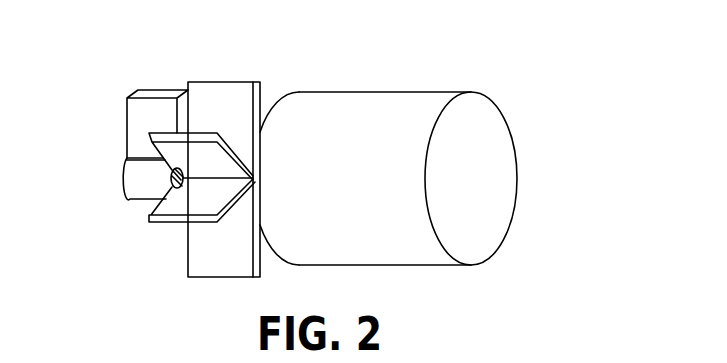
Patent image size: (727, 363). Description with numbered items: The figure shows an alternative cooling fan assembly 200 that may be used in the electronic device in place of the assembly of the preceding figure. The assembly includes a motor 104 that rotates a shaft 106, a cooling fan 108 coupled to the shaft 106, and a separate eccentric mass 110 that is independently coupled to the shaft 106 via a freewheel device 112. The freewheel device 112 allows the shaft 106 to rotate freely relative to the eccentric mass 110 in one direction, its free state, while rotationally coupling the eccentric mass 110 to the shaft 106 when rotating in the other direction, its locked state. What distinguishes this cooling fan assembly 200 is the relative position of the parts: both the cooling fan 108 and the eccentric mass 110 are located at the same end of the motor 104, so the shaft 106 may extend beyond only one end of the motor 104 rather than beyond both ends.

The cooling fan assembly 200 is at (527, 57).
The motor 104 is at (322, 92).
The shaft 106 is at (181, 188).
The cooling fan 108 is at (198, 82).
The eccentric mass 110 is at (127, 98).
The freewheel device 112 is at (172, 177).